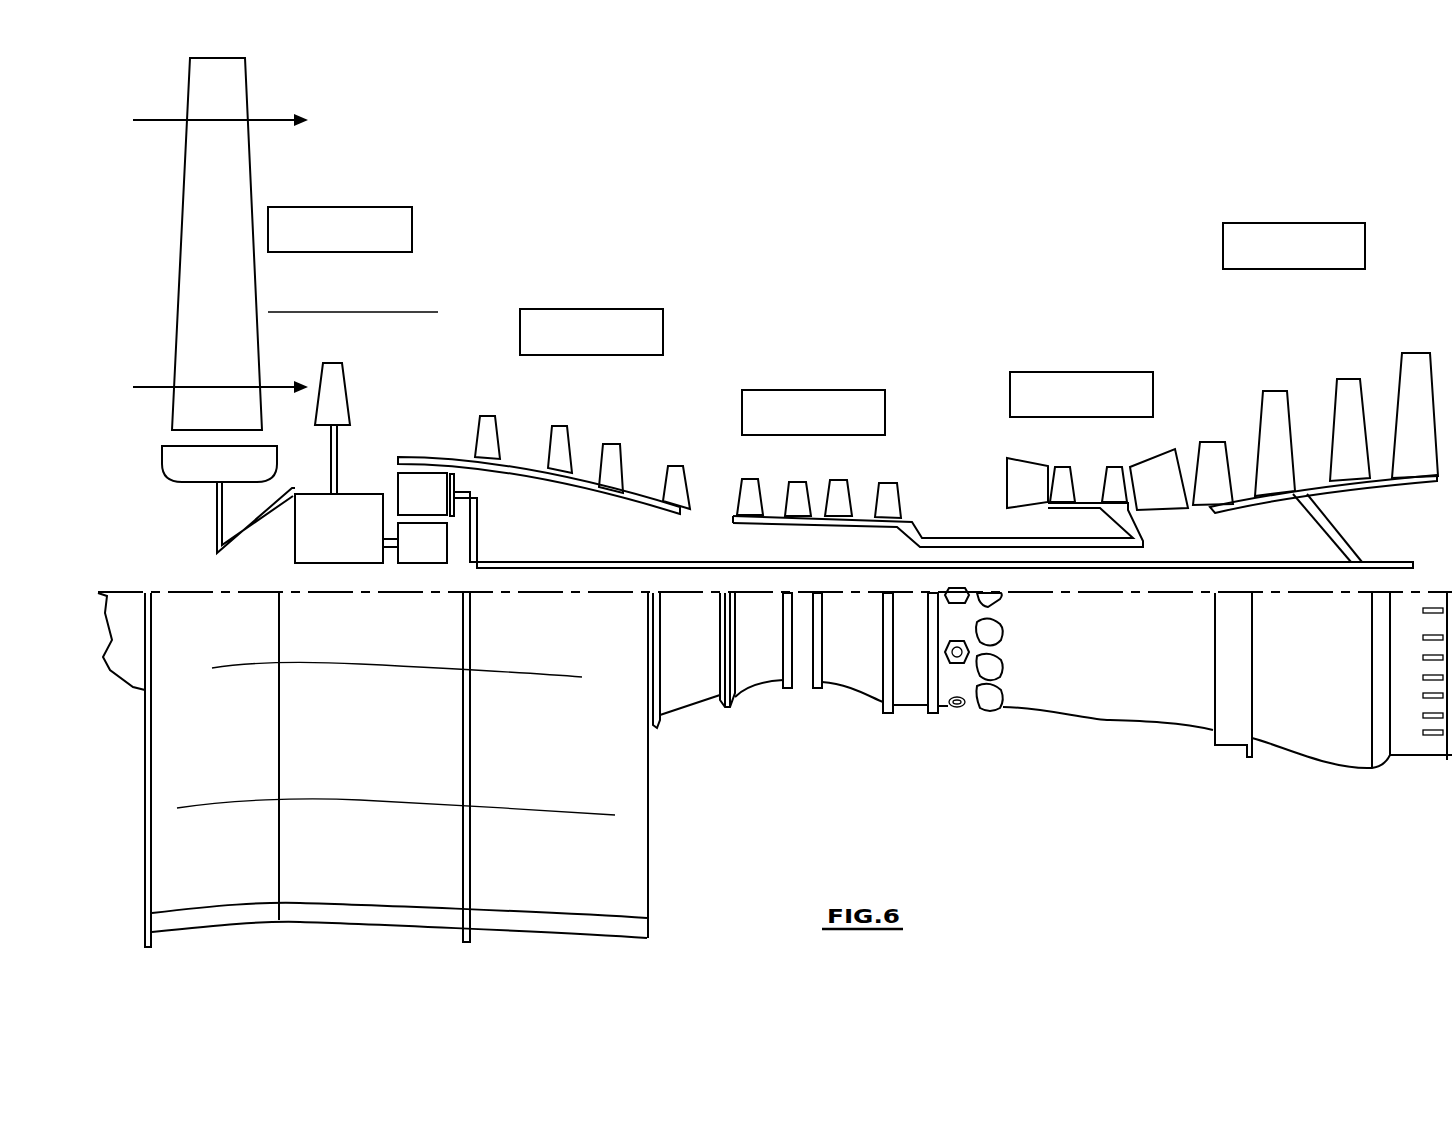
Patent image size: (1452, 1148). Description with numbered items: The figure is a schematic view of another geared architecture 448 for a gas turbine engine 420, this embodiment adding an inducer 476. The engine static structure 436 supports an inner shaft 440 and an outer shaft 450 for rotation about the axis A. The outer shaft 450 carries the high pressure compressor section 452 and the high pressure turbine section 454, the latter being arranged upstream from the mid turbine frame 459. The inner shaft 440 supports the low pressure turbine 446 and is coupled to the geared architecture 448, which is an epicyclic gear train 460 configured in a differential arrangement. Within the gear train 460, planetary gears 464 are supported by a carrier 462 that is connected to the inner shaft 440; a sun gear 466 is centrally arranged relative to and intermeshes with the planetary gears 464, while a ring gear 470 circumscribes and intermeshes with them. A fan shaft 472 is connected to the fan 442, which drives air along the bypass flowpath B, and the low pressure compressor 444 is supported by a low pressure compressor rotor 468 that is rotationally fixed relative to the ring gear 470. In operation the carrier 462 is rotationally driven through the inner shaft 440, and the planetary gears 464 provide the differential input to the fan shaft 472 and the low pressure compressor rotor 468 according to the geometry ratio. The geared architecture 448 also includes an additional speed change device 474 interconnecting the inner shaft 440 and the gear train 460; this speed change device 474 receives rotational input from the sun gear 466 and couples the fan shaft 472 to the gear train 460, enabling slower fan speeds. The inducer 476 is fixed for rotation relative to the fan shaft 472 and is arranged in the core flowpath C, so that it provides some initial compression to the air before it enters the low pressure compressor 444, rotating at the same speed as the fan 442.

The engine 420 is at (775, 502).
The engine static structure 436 is at (997, 429).
The inner shaft 440 is at (660, 572).
The fan 442 is at (228, 177).
The low pressure compressor 444 is at (468, 412).
The low pressure turbine 446 is at (1187, 320).
The geared architecture 448 is at (407, 388).
The outer shaft 450 is at (1060, 545).
The high pressure compressor section 452 is at (730, 383).
The high pressure turbine section 454 is at (1132, 367).
The mid turbine frame 459 is at (1165, 448).
The epicyclic gear train 460 is at (428, 607).
The carrier 462 is at (477, 547).
The planetary gears 464 is at (410, 493).
The sun gear 466 is at (440, 552).
The low pressure compressor rotor 468 is at (535, 477).
The ring gear 470 is at (423, 457).
The fan shaft 472 is at (213, 498).
The speed change device 474 is at (343, 563).
The inducer 476 is at (335, 393).
The axis A is at (572, 593).
The bypass flowpath B is at (275, 118).
The core flowpath C is at (262, 390).